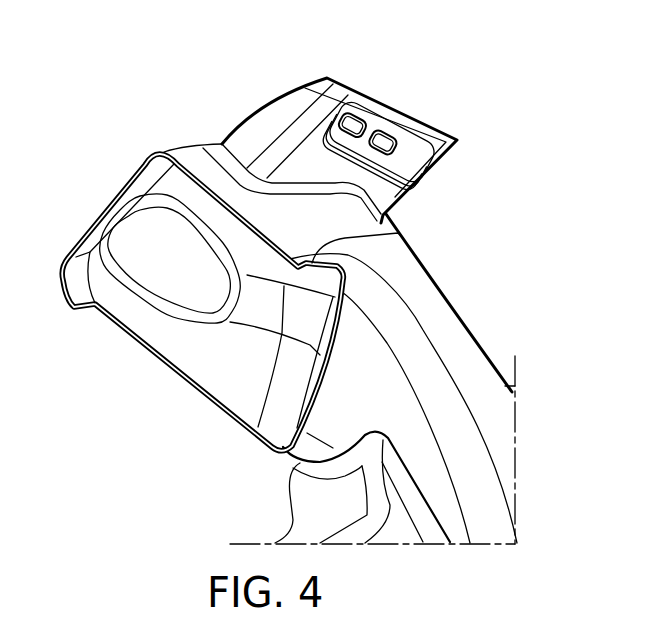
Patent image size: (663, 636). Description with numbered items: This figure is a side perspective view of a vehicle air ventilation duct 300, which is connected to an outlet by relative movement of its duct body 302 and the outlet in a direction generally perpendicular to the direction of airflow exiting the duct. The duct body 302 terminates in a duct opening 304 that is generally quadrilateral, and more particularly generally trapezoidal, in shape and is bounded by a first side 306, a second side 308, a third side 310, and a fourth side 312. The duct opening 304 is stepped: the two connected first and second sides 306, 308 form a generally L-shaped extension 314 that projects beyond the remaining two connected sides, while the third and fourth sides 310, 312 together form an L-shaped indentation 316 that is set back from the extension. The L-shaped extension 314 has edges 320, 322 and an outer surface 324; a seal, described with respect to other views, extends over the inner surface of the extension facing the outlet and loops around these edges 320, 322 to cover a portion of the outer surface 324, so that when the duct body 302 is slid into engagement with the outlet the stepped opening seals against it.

The vehicle air ventilation duct 300 is at (482, 309).
The duct body 302 is at (472, 465).
The duct opening 304 is at (235, 336).
The first side 306 is at (112, 208).
The second side 308 is at (193, 162).
The third side 310 is at (278, 441).
The fourth side 312 is at (216, 400).
The L-shaped extension 314 is at (162, 152).
The L-shaped indentation 316 is at (162, 355).
The edge of the L-shaped extension 320 is at (388, 236).
The edge of the L-shaped extension 322 is at (96, 308).
The outer surface 324 is at (263, 228).